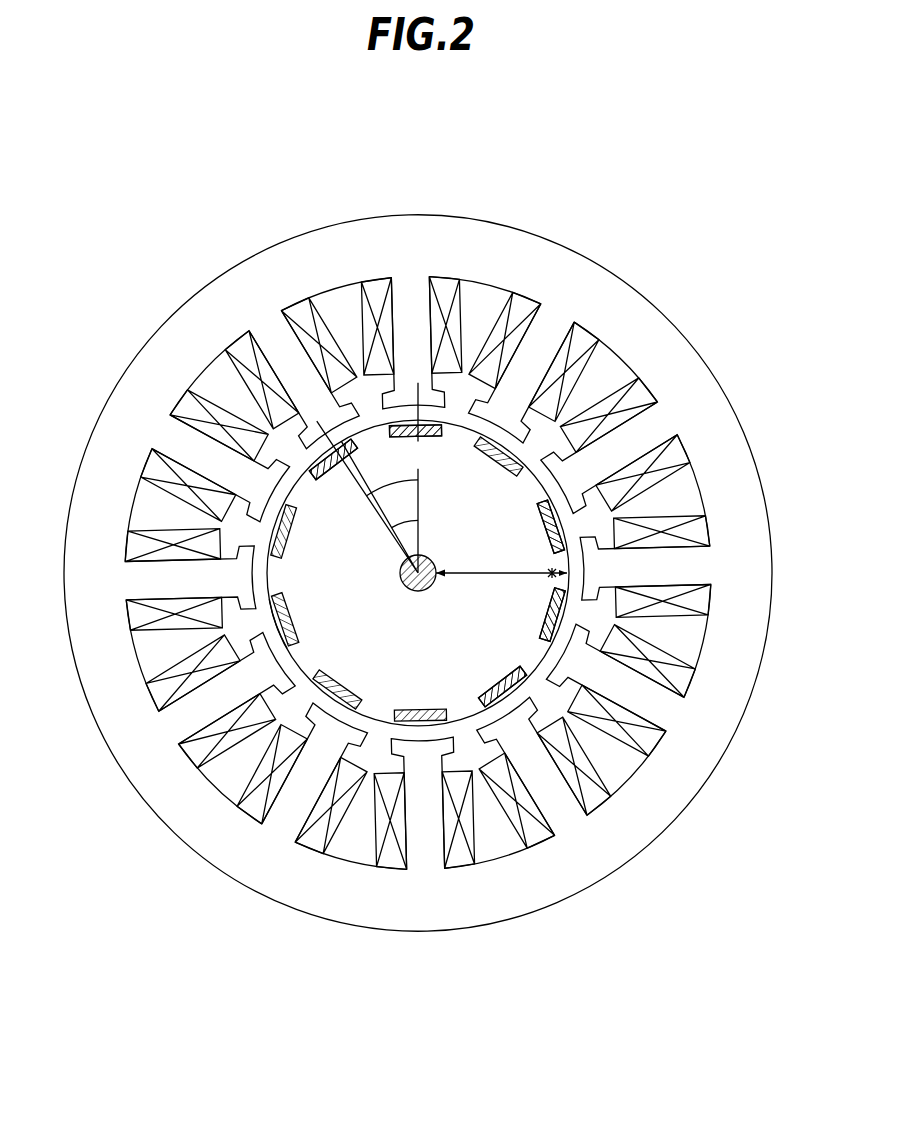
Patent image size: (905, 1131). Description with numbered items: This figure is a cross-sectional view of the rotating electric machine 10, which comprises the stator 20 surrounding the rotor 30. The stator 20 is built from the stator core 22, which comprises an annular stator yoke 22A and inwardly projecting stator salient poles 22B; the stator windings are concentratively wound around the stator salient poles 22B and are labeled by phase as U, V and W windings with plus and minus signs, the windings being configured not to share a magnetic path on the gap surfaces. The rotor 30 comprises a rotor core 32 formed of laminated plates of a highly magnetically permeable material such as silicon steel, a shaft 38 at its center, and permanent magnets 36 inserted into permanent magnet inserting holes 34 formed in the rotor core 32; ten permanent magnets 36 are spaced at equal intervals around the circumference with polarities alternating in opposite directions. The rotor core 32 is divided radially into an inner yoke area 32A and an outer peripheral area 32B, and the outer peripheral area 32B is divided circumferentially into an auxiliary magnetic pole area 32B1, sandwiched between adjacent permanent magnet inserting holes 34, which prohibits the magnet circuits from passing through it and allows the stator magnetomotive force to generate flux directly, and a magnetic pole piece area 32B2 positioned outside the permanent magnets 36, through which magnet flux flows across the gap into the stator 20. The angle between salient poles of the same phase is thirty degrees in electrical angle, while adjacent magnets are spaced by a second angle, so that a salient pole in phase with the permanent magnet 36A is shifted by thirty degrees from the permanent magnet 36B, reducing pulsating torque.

The rotating electric machine 10 is at (703, 266).
The stator 20 is at (172, 202).
The stator core 22 is at (262, 297).
The stator yoke 22A is at (242, 282).
The stator salient poles 22B is at (273, 330).
The rotor 30 is at (345, 612).
The rotor core 32 is at (228, 792).
The inner yoke area 32A is at (501, 559).
The outer peripheral area 32B is at (562, 552).
The auxiliary magnetic pole area 32B1 is at (527, 662).
The magnetic pole piece area 32B2 is at (562, 617).
The permanent magnet inserting holes 34 is at (278, 611).
The permanent magnets 36 is at (277, 626).
The permanent magnet 36A is at (438, 448).
The permanent magnet 36B is at (318, 490).
The shaft 38 is at (415, 588).